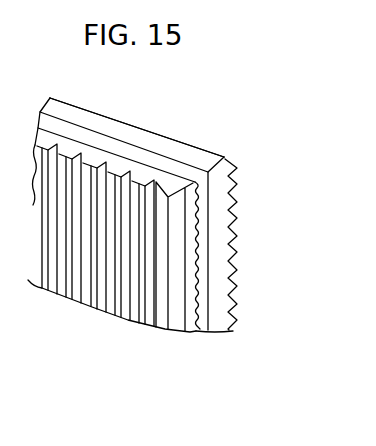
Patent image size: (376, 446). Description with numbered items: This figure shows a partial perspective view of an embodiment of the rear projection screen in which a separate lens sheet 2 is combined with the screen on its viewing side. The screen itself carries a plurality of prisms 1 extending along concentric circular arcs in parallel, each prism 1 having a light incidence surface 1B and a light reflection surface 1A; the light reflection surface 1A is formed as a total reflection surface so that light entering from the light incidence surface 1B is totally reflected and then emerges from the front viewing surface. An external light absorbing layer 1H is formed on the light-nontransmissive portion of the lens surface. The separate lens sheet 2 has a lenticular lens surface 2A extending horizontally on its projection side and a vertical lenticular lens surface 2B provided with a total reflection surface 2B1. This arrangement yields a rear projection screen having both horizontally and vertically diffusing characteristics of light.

The prism 1 is at (184, 214).
The light reflection surface 1A is at (226, 159).
The light incidence surface 1B is at (232, 174).
The external light absorbing layer 1H is at (201, 178).
The separate lens sheet 2 is at (137, 274).
The lenticular lens surface 2A is at (208, 332).
The vertical lenticular lens surface 2B is at (162, 333).
The total reflection surface 2B1 is at (180, 332).